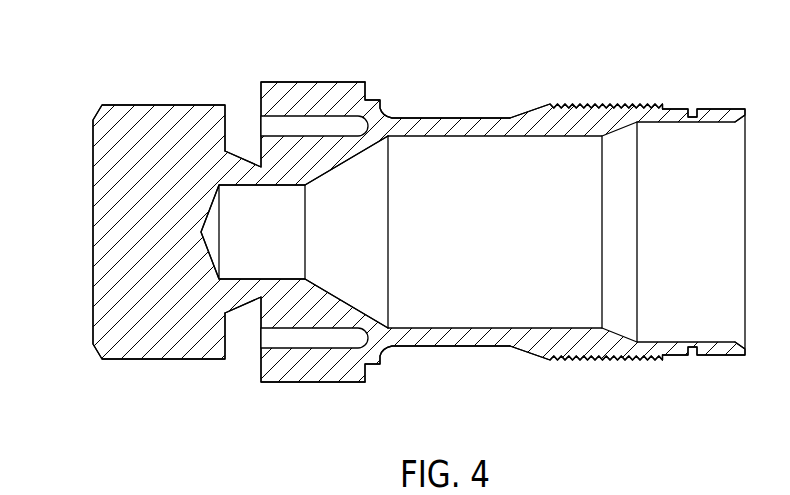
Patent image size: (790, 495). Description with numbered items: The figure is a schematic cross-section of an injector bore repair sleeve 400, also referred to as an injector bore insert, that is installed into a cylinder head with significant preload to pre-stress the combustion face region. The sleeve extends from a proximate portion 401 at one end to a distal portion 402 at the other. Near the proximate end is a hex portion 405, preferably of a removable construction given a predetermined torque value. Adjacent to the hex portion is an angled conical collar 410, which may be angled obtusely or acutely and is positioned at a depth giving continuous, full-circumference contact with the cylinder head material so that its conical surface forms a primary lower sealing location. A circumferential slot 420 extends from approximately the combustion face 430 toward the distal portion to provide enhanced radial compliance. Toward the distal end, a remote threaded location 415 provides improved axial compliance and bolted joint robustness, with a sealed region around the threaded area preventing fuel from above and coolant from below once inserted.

The injector bore repair sleeve 400 is at (172, 57).
The hex portion 405 is at (110, 203).
The proximate portion 401 is at (219, 282).
The combustion face 430 is at (261, 367).
The circumferential slot 420 is at (313, 340).
The angled conical collar 410 is at (353, 383).
The remote threaded location 415 is at (563, 361).
The distal portion 402 is at (745, 356).